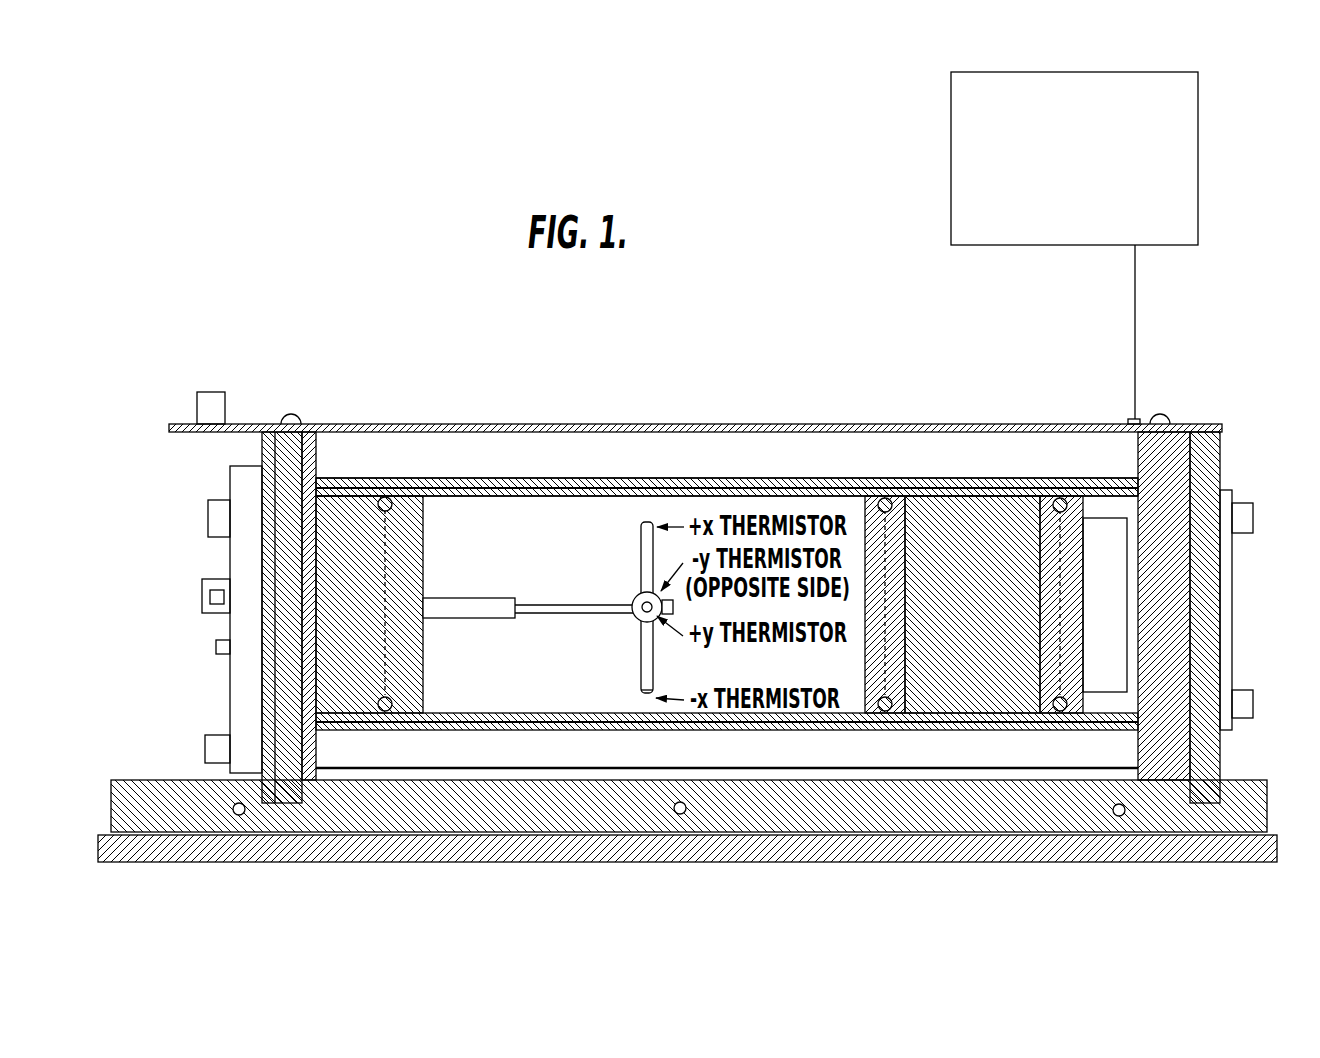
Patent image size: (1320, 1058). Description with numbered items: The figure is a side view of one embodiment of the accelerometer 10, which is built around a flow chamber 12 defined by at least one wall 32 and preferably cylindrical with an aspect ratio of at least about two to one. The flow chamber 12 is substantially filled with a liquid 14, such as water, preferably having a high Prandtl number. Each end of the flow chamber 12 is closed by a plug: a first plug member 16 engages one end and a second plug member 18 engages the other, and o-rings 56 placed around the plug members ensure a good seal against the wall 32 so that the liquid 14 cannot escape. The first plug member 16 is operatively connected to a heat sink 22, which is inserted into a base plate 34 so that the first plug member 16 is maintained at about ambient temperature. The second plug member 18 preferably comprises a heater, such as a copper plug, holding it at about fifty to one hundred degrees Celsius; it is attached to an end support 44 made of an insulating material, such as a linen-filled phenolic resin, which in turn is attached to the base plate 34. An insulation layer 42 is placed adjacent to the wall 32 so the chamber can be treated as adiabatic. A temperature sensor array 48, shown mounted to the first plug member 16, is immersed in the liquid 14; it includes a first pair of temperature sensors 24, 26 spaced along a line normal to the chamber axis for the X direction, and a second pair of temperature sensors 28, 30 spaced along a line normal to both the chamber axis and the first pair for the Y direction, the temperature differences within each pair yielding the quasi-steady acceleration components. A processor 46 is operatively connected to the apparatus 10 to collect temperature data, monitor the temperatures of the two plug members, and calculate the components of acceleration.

The accelerometer 10 is at (1194, 348).
The flow chamber 12 is at (587, 456).
The liquid 14 is at (647, 520).
The first plug member 16 is at (345, 497).
The second plug member 18 is at (950, 496).
The heat sink 22 is at (262, 447).
The temperature sensor 24 is at (620, 478).
The temperature sensor 26 is at (646, 696).
The temperature sensor 28 is at (652, 620).
The temperature sensor 30 is at (662, 612).
The wall 32 is at (513, 478).
The base plate 34 is at (140, 779).
The insulation layer 42 is at (446, 480).
The end support 44 is at (1222, 478).
The processor 46 is at (950, 230).
The temperature sensor array 48 is at (573, 674).
The o-rings 56 is at (385, 709).